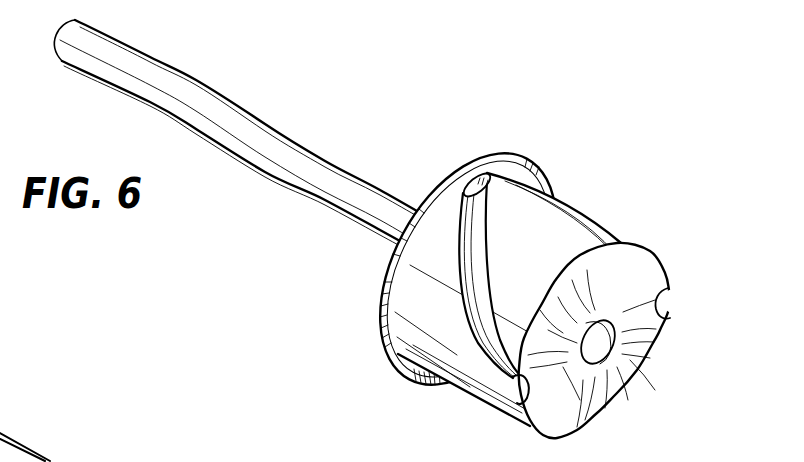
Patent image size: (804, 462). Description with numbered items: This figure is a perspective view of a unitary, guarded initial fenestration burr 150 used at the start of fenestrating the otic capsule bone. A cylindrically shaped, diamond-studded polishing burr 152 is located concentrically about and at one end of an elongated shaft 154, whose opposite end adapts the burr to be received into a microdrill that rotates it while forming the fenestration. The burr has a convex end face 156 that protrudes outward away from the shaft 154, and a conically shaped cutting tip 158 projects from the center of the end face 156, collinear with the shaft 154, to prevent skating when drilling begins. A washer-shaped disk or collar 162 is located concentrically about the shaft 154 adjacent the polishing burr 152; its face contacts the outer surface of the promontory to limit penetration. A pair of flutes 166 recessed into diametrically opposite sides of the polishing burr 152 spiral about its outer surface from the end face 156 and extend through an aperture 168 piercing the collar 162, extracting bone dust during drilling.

The initial fenestration burr 150 is at (262, 209).
The polishing burr 152 is at (483, 385).
The shaft 154 is at (263, 125).
The end face 156 is at (624, 402).
The cutting tip 158 is at (603, 332).
The collar 162 is at (381, 293).
The flutes 166 is at (665, 305).
The aperture 168 is at (486, 176).